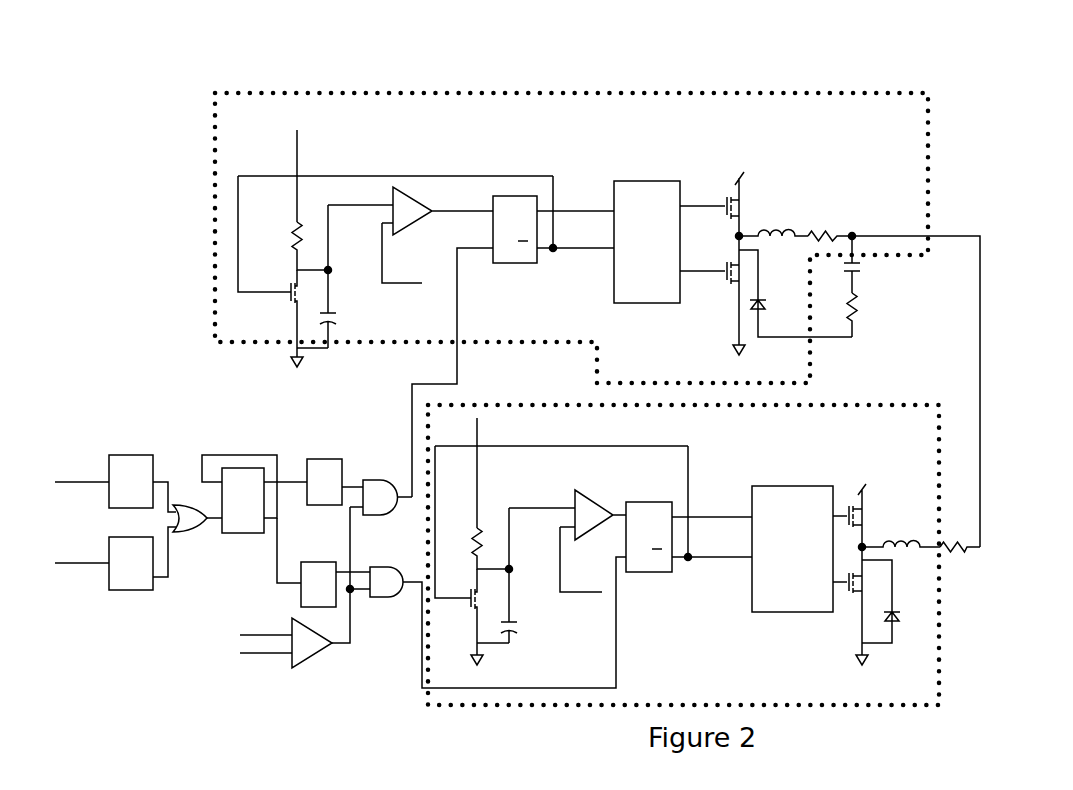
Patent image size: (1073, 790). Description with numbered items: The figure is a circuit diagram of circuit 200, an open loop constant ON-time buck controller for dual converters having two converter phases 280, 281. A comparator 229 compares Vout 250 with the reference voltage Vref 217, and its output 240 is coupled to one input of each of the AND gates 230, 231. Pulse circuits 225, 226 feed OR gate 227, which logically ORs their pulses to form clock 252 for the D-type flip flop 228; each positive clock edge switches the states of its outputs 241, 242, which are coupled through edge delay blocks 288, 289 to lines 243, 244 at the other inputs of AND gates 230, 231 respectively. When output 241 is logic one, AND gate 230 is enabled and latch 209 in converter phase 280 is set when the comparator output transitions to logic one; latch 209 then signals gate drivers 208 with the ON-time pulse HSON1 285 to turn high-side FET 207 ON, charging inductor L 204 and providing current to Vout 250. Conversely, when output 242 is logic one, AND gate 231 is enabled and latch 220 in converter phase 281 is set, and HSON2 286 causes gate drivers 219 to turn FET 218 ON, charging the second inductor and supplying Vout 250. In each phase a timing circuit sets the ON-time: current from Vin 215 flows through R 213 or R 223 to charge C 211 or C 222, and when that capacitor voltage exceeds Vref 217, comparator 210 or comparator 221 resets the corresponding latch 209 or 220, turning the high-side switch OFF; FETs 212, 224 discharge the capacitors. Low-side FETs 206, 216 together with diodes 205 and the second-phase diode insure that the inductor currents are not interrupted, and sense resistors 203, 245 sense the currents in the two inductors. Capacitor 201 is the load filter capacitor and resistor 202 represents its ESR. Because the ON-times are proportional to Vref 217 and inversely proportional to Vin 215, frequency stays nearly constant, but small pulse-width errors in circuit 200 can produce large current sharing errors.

The circuit 200 is at (520, 58).
The converter phase 280 is at (758, 91).
The converter phase 281 is at (940, 630).
The Vin 215 is at (320, 113).
The R 213 is at (302, 217).
The FET 212 is at (292, 281).
The C 211 is at (336, 314).
The comparator 210 is at (423, 190).
The Vref 217 is at (407, 285).
The latch 209 is at (510, 190).
The HSON1 285 is at (583, 187).
The gate drivers 208 is at (647, 180).
The high-side FET 207 is at (718, 219).
The FET 206 is at (725, 284).
The diode 205 is at (758, 297).
The inductor L 204 is at (767, 224).
The sense resistor 203 is at (813, 228).
The capacitor 201 is at (868, 272).
The resistor 202 is at (860, 307).
The Vout 250 is at (945, 235).
The pulse circuit 225 is at (132, 453).
The pulse circuit 226 is at (130, 592).
The OR gate 227 is at (187, 531).
The clock 252 is at (217, 515).
The flip flop 228 is at (238, 467).
The output 241 is at (298, 480).
The output 242 is at (275, 550).
The edge delay 288 is at (323, 455).
The edge delay 289 is at (310, 558).
The AND gate input line 243 is at (348, 480).
The AND gate 230 is at (365, 480).
The AND gate input line 244 is at (350, 558).
The AND gate 231 is at (383, 598).
The comparator 229 is at (313, 657).
The output 240 is at (342, 648).
The R 223 is at (485, 525).
The FET 224 is at (472, 591).
The C 222 is at (520, 628).
The comparator 221 is at (603, 503).
The latch 220 is at (660, 572).
The HSON2 286 is at (718, 493).
The gate drivers 219 is at (790, 613).
The FET 218 is at (862, 518).
The FET 216 is at (850, 594).
The sense resistor 245 is at (953, 553).